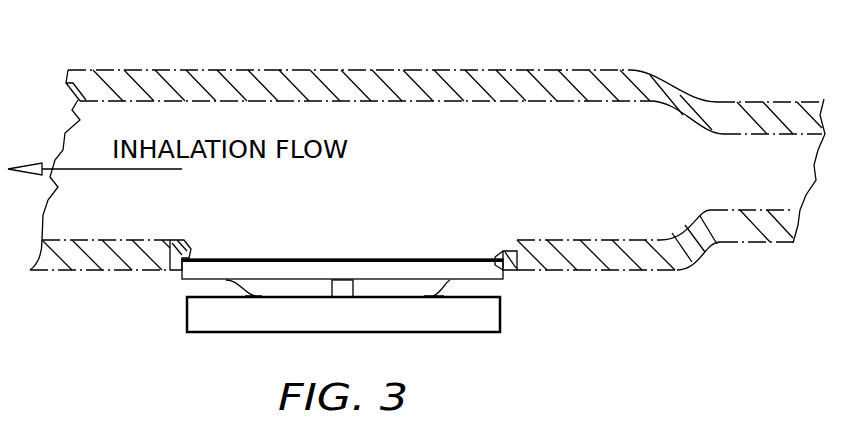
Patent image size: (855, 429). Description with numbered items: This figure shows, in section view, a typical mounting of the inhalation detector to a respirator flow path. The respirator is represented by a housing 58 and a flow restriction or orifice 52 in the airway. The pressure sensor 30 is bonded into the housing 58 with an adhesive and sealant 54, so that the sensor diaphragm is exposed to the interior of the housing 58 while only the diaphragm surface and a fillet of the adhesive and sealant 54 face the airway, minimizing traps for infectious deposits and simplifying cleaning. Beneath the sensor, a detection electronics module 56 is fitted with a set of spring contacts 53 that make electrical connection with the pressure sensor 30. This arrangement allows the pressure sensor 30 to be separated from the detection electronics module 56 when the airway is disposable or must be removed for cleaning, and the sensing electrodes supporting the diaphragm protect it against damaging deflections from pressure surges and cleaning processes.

The pressure sensor 30 is at (293, 272).
The flow restriction or orifice 52 is at (748, 172).
The spring contacts 53 is at (457, 288).
The adhesive and sealant 54 is at (492, 250).
The detection electronics module 56 is at (187, 304).
The housing 58 is at (354, 70).